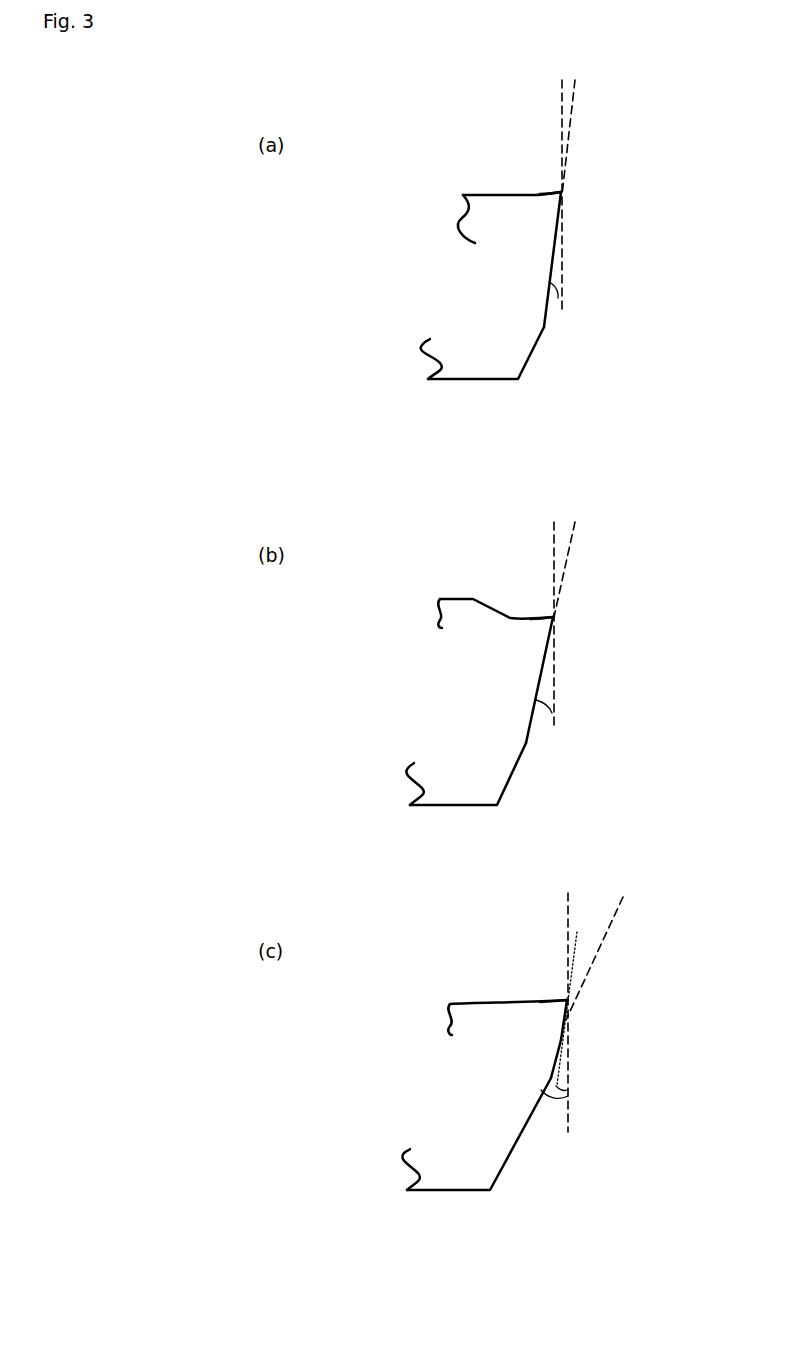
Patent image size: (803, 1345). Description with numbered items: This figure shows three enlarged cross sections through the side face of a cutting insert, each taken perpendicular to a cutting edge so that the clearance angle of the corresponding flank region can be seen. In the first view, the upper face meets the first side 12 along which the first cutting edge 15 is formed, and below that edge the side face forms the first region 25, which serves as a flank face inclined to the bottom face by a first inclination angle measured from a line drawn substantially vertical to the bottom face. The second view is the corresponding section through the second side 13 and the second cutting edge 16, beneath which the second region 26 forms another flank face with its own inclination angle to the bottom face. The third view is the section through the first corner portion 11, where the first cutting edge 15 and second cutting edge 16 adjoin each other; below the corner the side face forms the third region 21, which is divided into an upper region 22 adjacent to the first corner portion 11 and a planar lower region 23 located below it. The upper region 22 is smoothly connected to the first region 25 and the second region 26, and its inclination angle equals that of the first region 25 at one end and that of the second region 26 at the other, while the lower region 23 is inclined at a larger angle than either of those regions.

The first corner portion 11 is at (567, 1000).
The first side 12 is at (606, 190).
The first cutting edge 15 is at (562, 193).
The second side 13 is at (598, 614).
The second cutting edge 16 is at (553, 617).
The third region 21 is at (636, 1039).
The upper region 22 is at (568, 1015).
The lower region 23 is at (563, 1058).
The first region 25 is at (545, 327).
The second region 26 is at (527, 743).